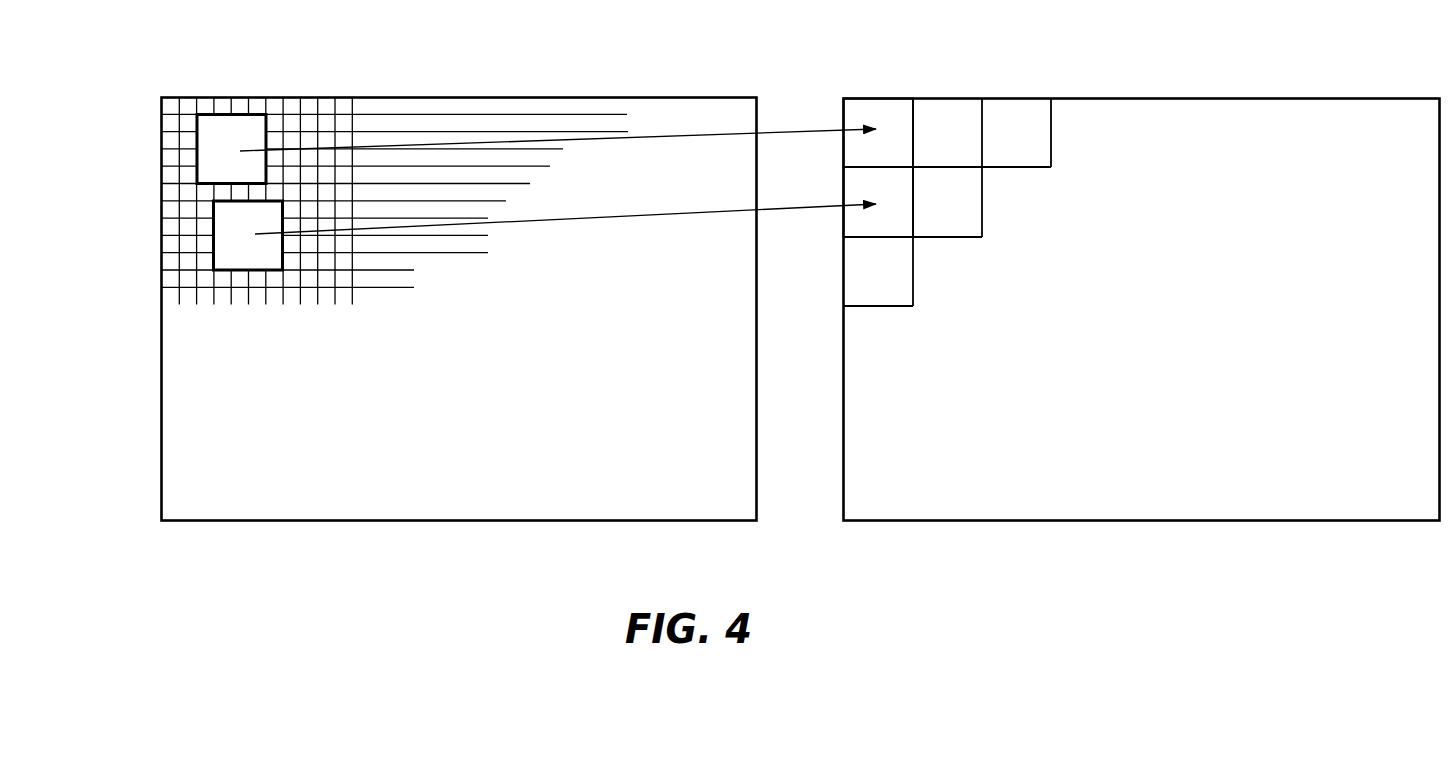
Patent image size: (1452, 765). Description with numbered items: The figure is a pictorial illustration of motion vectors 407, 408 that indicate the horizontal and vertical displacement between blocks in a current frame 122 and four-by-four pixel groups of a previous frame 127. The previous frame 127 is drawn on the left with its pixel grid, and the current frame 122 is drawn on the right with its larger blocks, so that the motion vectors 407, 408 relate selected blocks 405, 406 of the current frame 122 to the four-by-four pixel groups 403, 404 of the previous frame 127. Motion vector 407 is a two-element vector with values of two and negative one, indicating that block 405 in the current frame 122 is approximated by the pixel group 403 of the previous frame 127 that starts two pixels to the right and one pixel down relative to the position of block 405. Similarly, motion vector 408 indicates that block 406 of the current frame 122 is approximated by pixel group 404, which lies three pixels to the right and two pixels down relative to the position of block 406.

The previous frame 127 is at (421, 97).
The current frame 122 is at (1142, 98).
The pixel group 403 is at (232, 132).
The pixel group 404 is at (232, 245).
The block 405 is at (880, 113).
The block 406 is at (900, 192).
The motion vector 407 is at (662, 135).
The motion vector 408 is at (547, 222).